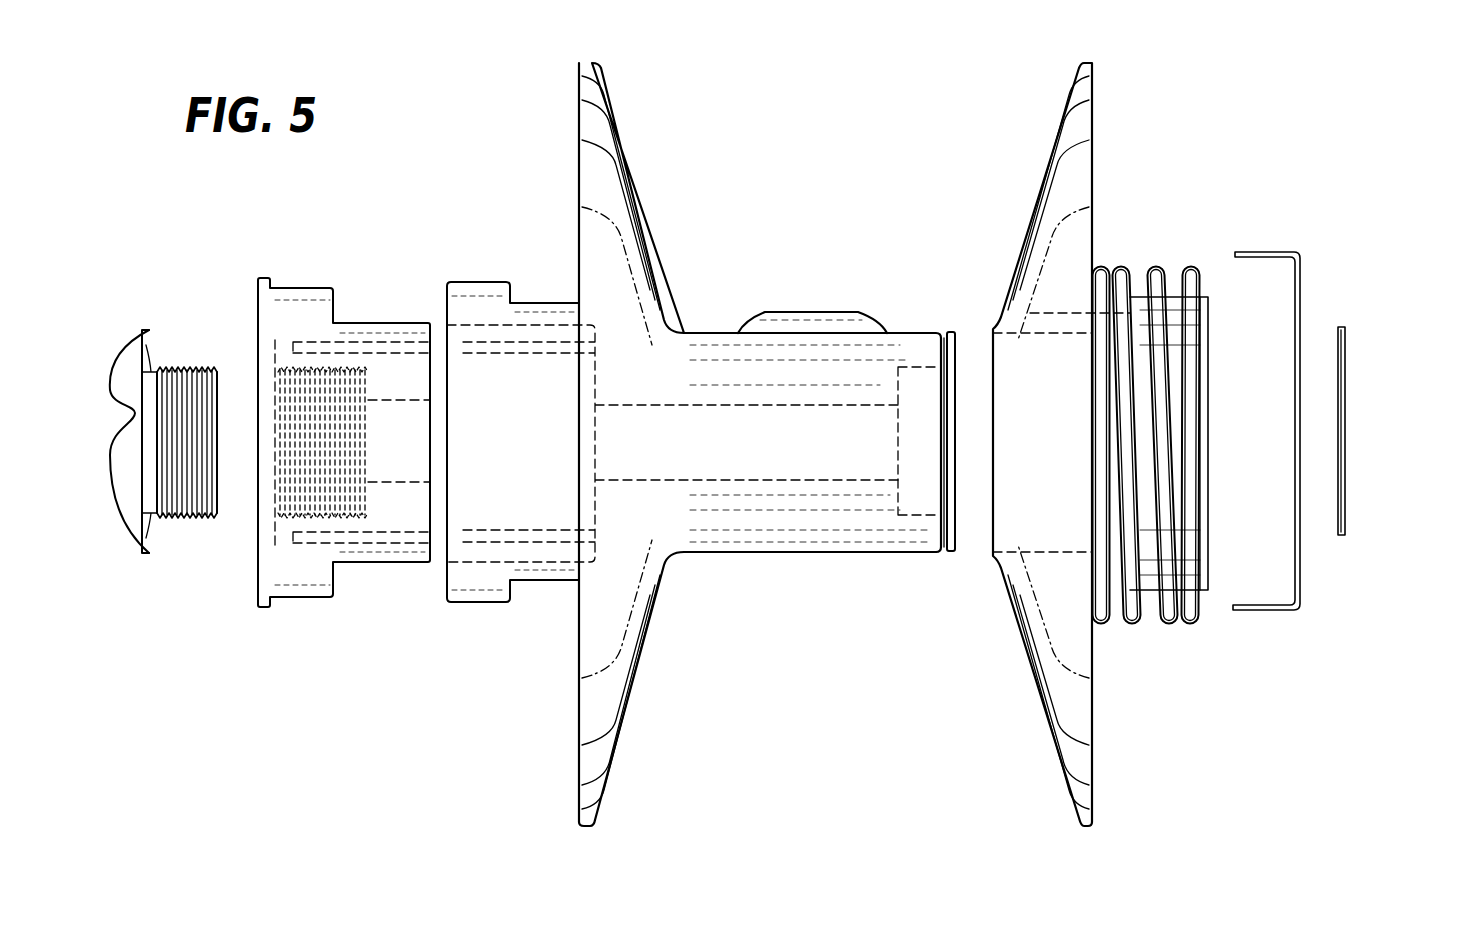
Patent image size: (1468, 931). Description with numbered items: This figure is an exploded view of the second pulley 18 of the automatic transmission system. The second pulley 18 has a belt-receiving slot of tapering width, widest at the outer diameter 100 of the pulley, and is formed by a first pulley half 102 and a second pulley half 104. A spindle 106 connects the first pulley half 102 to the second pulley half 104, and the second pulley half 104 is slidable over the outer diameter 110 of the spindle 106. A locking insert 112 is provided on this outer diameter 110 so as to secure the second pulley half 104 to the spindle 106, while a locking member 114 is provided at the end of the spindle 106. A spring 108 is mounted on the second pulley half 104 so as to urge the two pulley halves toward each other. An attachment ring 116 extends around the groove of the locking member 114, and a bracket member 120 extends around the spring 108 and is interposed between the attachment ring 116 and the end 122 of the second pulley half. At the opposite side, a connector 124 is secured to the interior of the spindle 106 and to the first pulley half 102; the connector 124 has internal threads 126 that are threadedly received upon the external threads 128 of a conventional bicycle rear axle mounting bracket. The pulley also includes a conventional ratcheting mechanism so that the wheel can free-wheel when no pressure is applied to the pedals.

The second pulley 18 is at (885, 745).
The outer diameter 100 is at (578, 70).
The first pulley half 102 is at (625, 237).
The second pulley half 104 is at (1095, 205).
The spindle 106 is at (695, 338).
The spring 108 is at (1160, 263).
The outer diameter of the spindle 110 is at (747, 553).
The locking insert 112 is at (838, 312).
The locking member 114 is at (945, 553).
The attachment ring 116 is at (1347, 357).
The bracket member 120 is at (1303, 265).
The end of the second pulley half 122 is at (1210, 503).
The connector 124 is at (305, 290).
The internal threads 126 is at (280, 500).
The external threads 128 is at (192, 368).